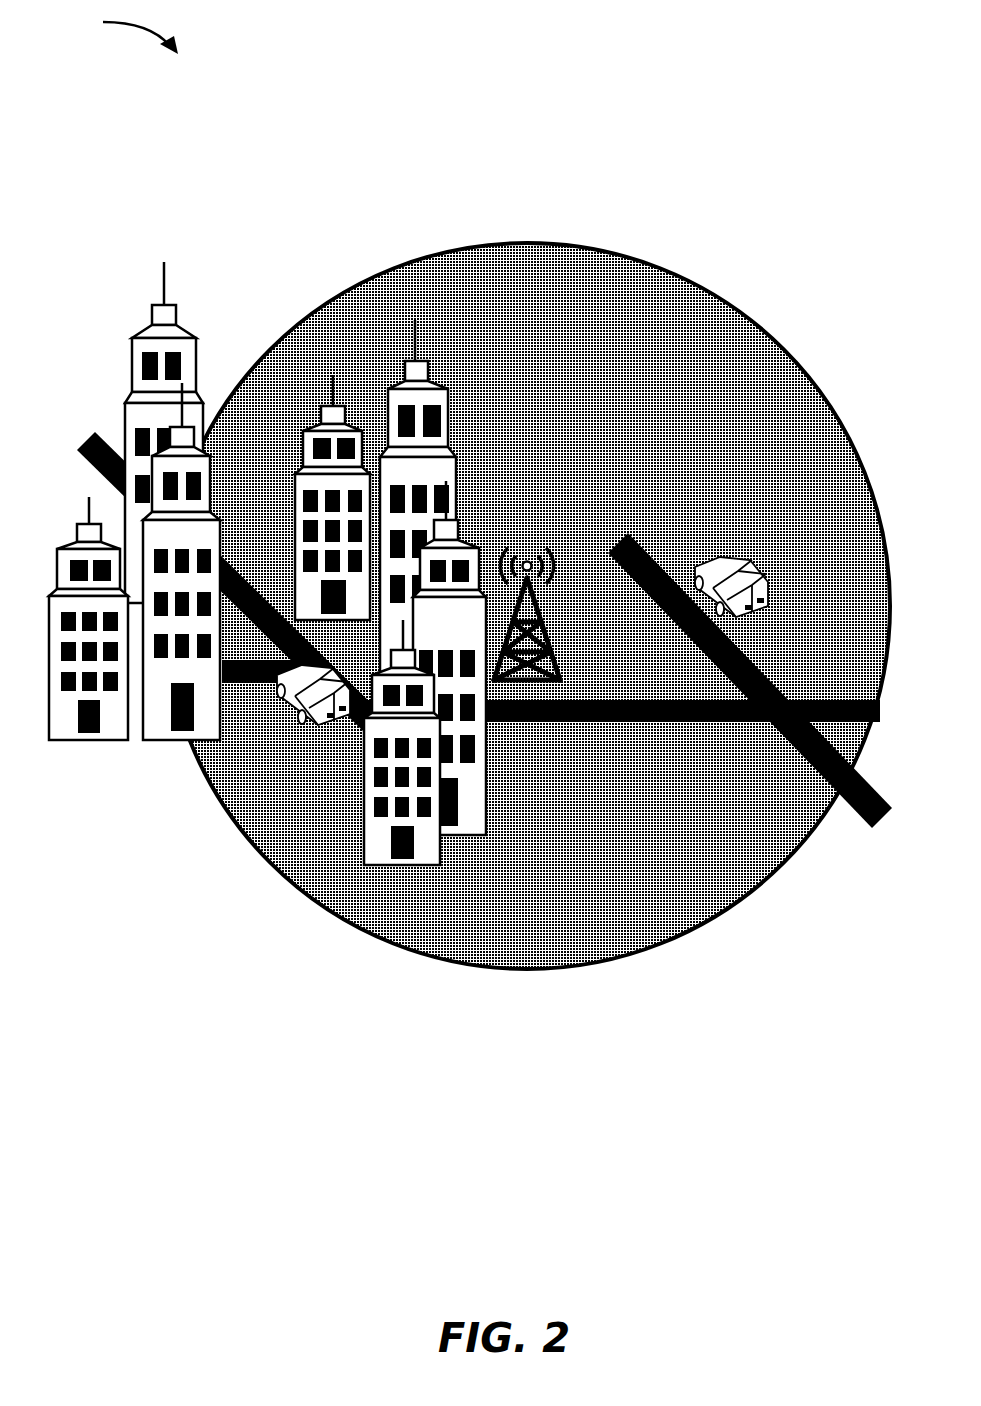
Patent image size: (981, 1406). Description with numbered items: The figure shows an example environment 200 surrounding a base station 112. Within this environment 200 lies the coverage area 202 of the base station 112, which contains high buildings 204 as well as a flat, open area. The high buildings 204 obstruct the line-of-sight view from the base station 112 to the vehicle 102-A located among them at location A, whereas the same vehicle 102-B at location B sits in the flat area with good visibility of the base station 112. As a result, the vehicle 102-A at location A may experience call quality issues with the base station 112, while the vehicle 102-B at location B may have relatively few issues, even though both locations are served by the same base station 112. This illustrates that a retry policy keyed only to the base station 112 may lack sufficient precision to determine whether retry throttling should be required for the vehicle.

The environment 200 is at (109, 33).
The coverage area 202 is at (512, 1031).
The high buildings 204 is at (186, 745).
The base station 112 is at (512, 537).
The vehicle at location A 102-A is at (298, 759).
The vehicle at location B 102-B is at (712, 547).